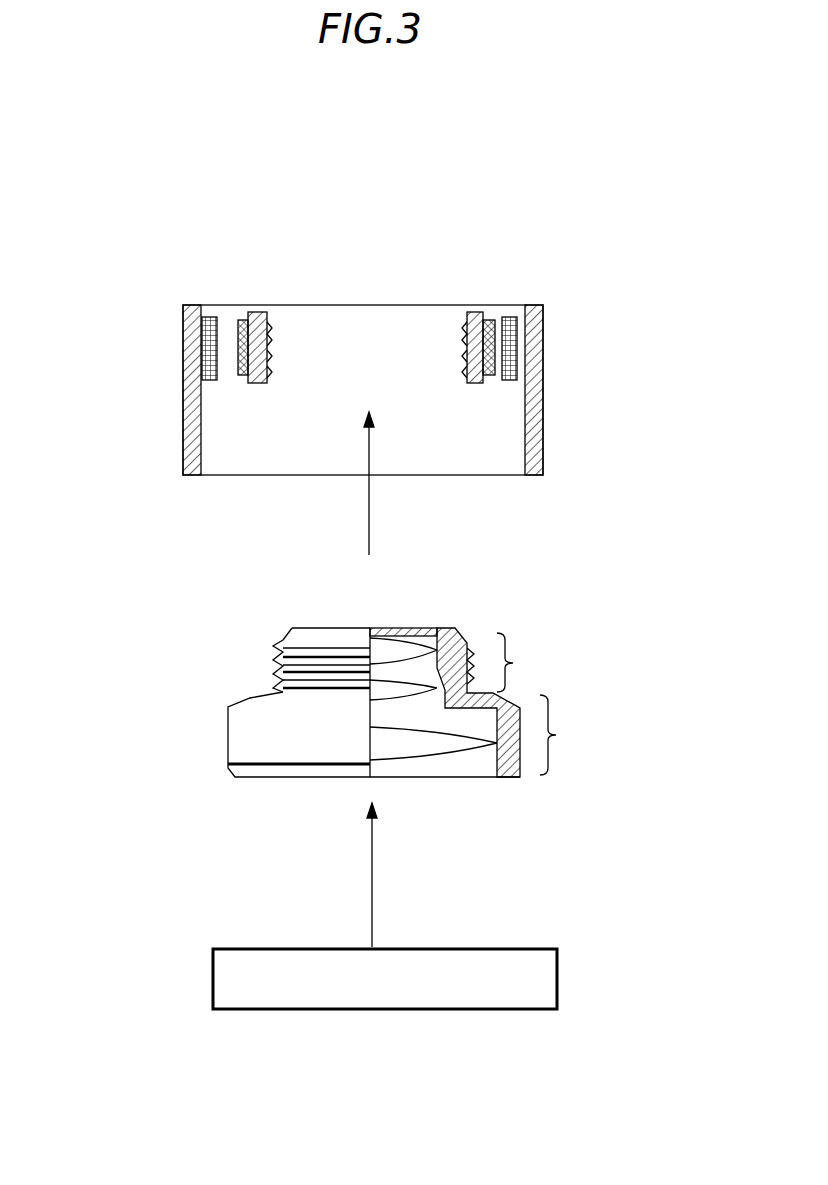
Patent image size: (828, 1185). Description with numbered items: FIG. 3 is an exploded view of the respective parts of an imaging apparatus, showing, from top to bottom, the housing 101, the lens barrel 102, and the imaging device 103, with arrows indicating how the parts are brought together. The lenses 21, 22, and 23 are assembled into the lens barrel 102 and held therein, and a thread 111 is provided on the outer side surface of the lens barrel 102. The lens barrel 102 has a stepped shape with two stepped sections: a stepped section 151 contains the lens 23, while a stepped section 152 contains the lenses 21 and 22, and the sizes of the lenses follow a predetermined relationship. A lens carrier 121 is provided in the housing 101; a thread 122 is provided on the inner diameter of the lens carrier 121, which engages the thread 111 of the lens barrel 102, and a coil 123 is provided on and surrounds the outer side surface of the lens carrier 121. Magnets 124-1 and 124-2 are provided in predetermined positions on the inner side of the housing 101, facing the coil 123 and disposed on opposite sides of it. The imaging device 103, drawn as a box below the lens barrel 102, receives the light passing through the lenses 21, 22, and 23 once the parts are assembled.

The housing 101 is at (188, 389).
The lens barrel 102 is at (337, 691).
The imaging device 103 is at (548, 985).
The thread 111 is at (265, 660).
The lens carrier 121 is at (257, 312).
The thread 122 is at (272, 330).
The coil 123 is at (490, 318).
The magnet 124-1 is at (208, 318).
The magnet 124-2 is at (512, 318).
The lens 21 is at (404, 645).
The lens 22 is at (437, 688).
The lens 23 is at (437, 745).
The stepped section 151 is at (568, 735).
The stepped section 152 is at (526, 662).